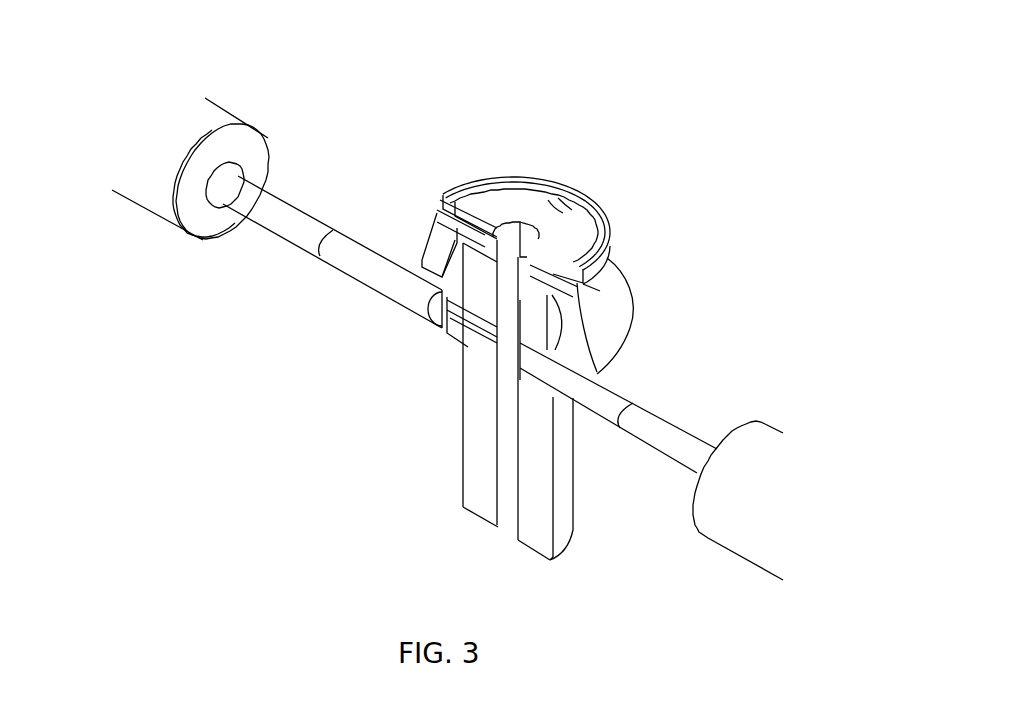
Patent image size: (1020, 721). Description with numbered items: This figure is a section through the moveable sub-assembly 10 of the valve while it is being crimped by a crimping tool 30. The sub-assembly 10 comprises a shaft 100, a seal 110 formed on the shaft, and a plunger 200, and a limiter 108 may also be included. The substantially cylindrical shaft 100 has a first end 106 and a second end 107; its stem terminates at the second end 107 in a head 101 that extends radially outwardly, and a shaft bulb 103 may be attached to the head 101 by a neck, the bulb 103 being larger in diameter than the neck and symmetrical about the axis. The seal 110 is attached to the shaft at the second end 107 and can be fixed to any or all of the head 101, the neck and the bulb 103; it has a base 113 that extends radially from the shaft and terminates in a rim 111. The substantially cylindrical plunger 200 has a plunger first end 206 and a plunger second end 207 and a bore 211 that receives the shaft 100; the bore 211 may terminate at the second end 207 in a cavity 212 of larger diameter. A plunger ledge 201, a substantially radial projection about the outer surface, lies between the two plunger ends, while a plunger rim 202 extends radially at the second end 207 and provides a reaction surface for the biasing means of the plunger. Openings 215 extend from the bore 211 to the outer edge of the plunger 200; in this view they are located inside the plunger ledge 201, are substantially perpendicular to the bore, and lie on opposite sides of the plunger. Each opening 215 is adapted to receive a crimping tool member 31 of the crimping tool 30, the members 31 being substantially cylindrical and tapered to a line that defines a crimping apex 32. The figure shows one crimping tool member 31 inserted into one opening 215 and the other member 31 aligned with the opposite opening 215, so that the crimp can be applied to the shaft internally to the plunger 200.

The crimping tool 30 is at (170, 78).
The moveable sub-assembly 10 is at (558, 143).
The crimping tool member 31 is at (363, 256).
The crimping apex 32 is at (440, 315).
The shaft 100 is at (508, 397).
The head 101 is at (607, 260).
The shaft bulb 103 is at (497, 233).
The first end 106 is at (515, 413).
The second end 107 is at (540, 238).
The limiter 108 is at (620, 303).
The seal 110 is at (565, 197).
The rim 111 is at (603, 210).
The base 113 is at (585, 196).
The plunger 200 is at (547, 520).
The plunger ledge 201 is at (568, 355).
The plunger rim 202 is at (598, 277).
The plunger first end 206 is at (547, 560).
The plunger second end 207 is at (442, 227).
The bore 211 is at (508, 523).
The cavity 212 is at (440, 197).
The opening 215 is at (465, 345).